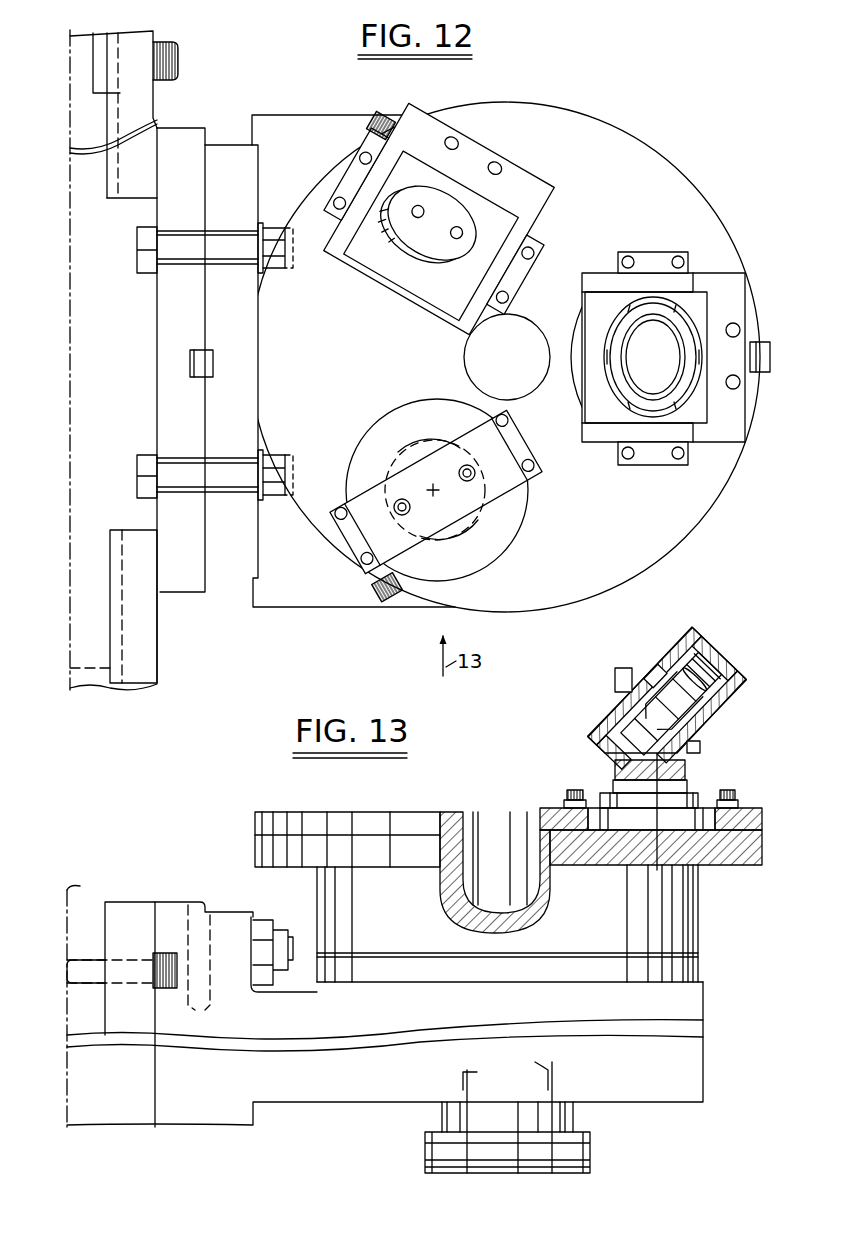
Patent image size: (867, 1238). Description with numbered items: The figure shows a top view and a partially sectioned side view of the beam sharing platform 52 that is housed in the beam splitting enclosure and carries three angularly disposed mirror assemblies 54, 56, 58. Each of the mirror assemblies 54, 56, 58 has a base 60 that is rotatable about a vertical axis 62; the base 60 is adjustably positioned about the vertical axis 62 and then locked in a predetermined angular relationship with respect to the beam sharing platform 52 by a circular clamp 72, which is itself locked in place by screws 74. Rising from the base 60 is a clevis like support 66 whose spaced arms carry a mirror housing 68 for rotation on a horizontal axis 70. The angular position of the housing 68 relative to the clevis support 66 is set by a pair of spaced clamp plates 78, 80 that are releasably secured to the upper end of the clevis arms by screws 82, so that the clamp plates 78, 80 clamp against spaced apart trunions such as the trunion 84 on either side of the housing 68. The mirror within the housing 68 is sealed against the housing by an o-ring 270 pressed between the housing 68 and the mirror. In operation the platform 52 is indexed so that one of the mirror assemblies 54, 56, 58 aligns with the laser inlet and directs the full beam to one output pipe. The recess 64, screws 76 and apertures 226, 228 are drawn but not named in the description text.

In FIG. 12, the beam sharing platform 52 is at (718, 489).
In FIG. 13, the beam sharing platform 52 is at (756, 822).
In FIG. 12, the mirror assembly 54 is at (531, 164).
In FIG. 13, the mirror assembly 54 is at (650, 688).
In FIG. 12, the mirror assembly 56 is at (691, 356).
In FIG. 12, the mirror assembly 58 is at (454, 506).
In FIG. 13, the base 60 is at (701, 763).
In FIG. 12, the vertical axis 62 is at (432, 487).
In FIG. 13, the vertical axis 62 is at (700, 870).
In FIG. 12, the circular recess 64 is at (470, 522).
In FIG. 13, the clevis like support 66 is at (639, 741).
In FIG. 13, the mirror housing 68 is at (705, 668).
In FIG. 13, the horizontal axis 70 is at (671, 704).
In FIG. 13, the circular clamp 72 is at (567, 802).
In FIG. 13, the screws 74 is at (732, 804).
In FIG. 13, the mounting screw 76 is at (576, 789).
In FIG. 12, the clamp plate 78 is at (648, 252).
In FIG. 12, the clamp plate 80 is at (660, 460).
In FIG. 12, the screws 82 is at (679, 252).
In FIG. 13, the trunion 84 is at (655, 675).
In FIG. 12, the aperture 226 is at (736, 326).
In FIG. 13, the aperture 226 is at (694, 679).
In FIG. 12, the aperture 228 is at (738, 383).
In FIG. 13, the o-ring 270 is at (671, 703).